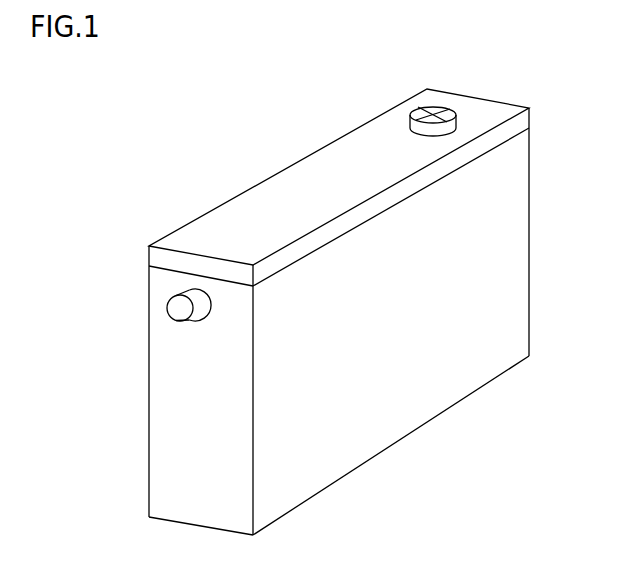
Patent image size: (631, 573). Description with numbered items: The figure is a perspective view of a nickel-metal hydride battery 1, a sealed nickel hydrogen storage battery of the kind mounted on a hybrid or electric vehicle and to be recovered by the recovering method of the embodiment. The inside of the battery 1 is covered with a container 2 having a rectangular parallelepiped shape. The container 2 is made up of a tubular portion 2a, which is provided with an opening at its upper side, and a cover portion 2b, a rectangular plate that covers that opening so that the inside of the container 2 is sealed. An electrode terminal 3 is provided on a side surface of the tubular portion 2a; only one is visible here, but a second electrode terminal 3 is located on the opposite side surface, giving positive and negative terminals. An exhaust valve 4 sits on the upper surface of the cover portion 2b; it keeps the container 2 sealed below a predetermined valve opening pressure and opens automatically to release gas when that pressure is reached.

The nickel-metal hydride battery 1 is at (243, 57).
The container 2 is at (308, 166).
The tubular portion 2a is at (525, 250).
The cover portion 2b is at (523, 123).
The electrode terminal 3 is at (176, 302).
The exhaust valve 4 is at (435, 108).